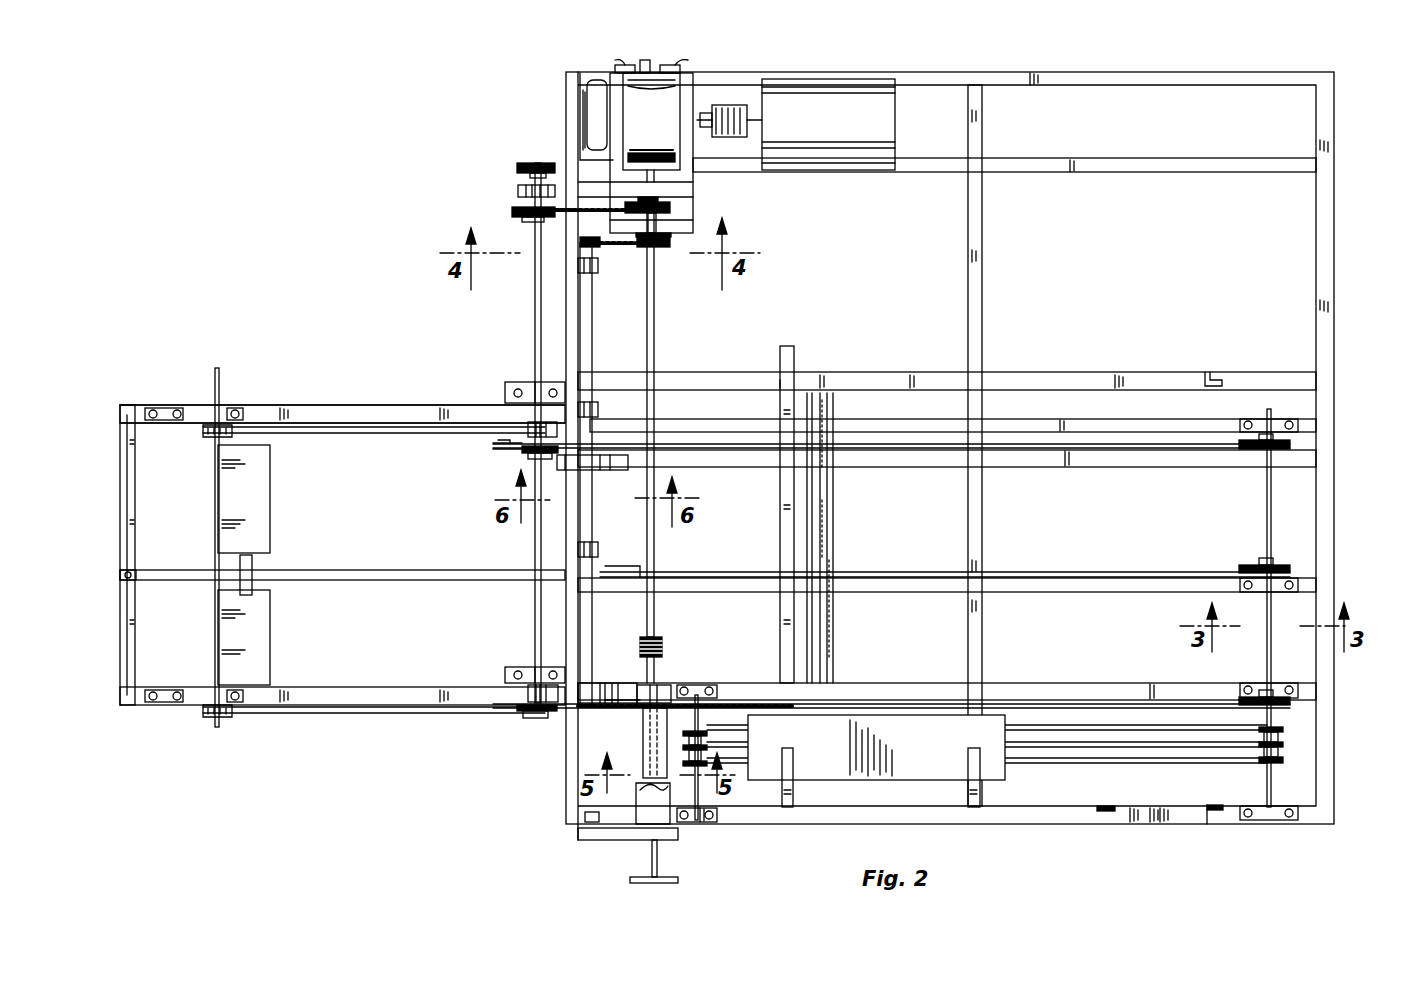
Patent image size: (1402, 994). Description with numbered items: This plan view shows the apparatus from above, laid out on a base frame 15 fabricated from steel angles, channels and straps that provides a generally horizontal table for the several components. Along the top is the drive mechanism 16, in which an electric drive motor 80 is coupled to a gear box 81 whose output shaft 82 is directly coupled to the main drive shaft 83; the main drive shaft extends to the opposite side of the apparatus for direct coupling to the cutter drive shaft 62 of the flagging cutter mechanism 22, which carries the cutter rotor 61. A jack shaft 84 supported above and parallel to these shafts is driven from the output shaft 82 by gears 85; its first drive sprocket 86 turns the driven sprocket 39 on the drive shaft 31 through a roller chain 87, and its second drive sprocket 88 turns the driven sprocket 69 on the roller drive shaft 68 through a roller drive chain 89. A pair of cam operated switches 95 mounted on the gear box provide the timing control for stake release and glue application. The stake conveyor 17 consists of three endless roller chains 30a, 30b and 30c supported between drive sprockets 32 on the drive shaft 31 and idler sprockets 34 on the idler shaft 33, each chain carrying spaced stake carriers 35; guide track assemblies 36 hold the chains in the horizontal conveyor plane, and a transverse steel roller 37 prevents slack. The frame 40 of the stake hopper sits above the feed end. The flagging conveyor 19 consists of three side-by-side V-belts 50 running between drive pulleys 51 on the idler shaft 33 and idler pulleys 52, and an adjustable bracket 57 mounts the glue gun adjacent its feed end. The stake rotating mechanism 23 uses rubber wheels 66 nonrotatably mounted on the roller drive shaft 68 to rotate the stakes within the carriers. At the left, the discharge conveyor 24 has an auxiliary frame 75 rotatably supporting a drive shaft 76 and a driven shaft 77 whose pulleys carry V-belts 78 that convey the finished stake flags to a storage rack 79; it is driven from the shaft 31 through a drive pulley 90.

The base frame 15 is at (1340, 168).
The drive mechanism 16 is at (782, 226).
The stake conveyor 17 is at (1072, 432).
The flagging conveyor 19 is at (1185, 770).
The flagging cutter mechanism 22 is at (614, 850).
The stake rotating mechanism 23 is at (602, 360).
The discharge conveyor 24 is at (300, 390).
The endless roller chain 30a is at (1250, 450).
The endless roller chain 30b is at (1250, 565).
The endless roller chain 30c is at (790, 702).
The drive shaft 31 is at (534, 316).
The drive sprockets 32 is at (524, 452).
The idler shaft 33 is at (1274, 508).
The idler sprockets 34 is at (1285, 568).
The stake carriers 35 is at (760, 700).
The guide track assemblies 36 is at (1130, 448).
The transverse steel roller 37 is at (822, 520).
The driven sprocket 39 is at (513, 210).
The hopper frame 40 is at (1216, 372).
The V-belts 50 is at (1100, 770).
The drive pulleys 51 is at (1283, 760).
The idler pulleys 52 is at (648, 740).
The adjustable bracket 57 is at (1108, 815).
The cutter rotor 61 is at (683, 745).
The cutter drive shaft 62 is at (660, 652).
The rubber wheels 66 is at (610, 470).
The roller drive shaft 68 is at (593, 326).
The driven sprocket 69 is at (595, 250).
The auxiliary frame 75 is at (367, 405).
The drive shaft 76 is at (536, 618).
The driven shaft 77 is at (214, 602).
The V-belts 78 is at (378, 433).
The storage rack 79 is at (272, 518).
The electric drive motor 80 is at (862, 80).
The gear box 81 is at (598, 106).
The gear box output shaft 82 is at (646, 60).
The main drive shaft 83 is at (656, 408).
The jack shaft 84 is at (656, 222).
The gears 85 is at (630, 152).
The first drive sprocket 86 is at (665, 208).
The roller chain 87 is at (606, 214).
The second drive sprocket 88 is at (655, 250).
The roller drive chain 89 is at (640, 250).
The drive pulley 90 is at (520, 164).
The cam operated switches 95 is at (625, 62).